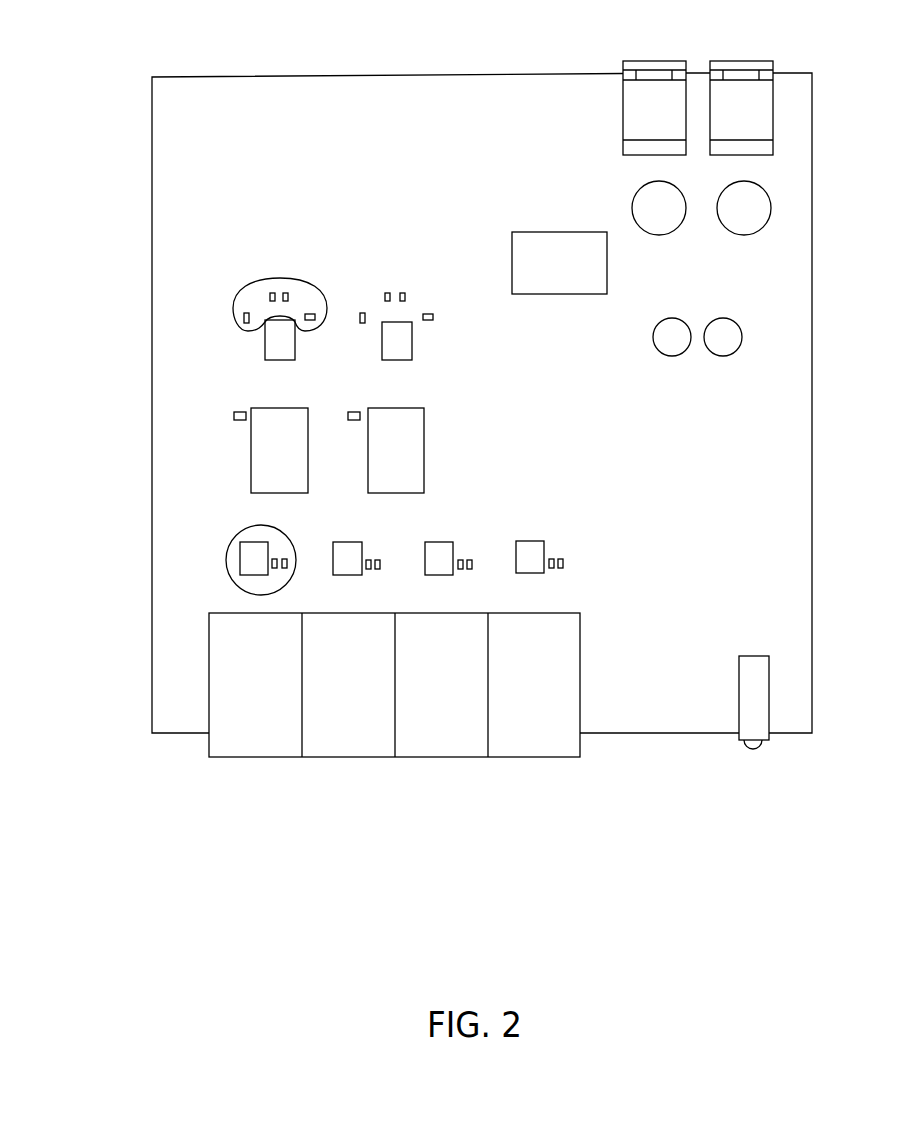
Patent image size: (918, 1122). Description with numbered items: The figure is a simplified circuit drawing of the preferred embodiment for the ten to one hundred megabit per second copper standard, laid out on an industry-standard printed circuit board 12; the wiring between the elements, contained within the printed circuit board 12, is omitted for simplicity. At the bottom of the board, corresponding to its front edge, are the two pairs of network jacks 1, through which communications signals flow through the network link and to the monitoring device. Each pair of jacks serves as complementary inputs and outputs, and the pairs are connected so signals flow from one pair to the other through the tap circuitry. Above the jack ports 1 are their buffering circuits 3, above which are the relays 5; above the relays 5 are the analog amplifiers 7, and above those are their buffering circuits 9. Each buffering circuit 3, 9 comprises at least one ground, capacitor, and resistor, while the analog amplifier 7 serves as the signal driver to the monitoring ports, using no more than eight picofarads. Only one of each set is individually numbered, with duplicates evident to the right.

The printed circuit board 12 is at (377, 75).
The buffering circuit 9 is at (262, 290).
The analog amplifier 7 is at (265, 348).
The relay 5 is at (251, 458).
The buffering circuit 3 is at (224, 563).
The RJ-45 jacks 1 is at (402, 873).